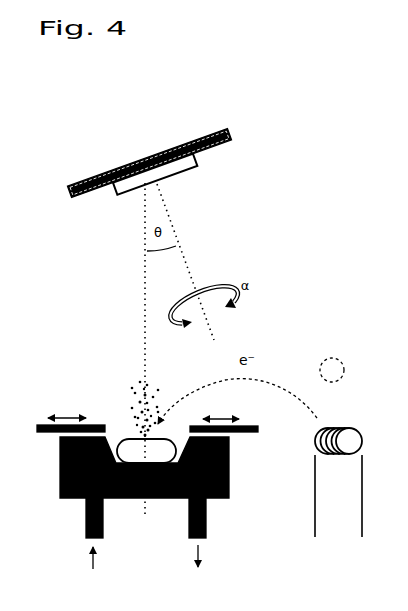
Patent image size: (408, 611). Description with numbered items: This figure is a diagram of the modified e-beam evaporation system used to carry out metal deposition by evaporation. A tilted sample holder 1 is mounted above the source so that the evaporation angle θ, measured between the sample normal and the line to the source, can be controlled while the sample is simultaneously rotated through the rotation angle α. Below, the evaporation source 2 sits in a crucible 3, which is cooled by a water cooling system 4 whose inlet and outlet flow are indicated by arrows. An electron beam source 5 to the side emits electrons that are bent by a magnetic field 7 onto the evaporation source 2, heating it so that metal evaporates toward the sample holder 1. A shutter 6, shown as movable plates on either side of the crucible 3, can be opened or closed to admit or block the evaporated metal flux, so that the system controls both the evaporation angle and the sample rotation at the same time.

The sample holder 1 is at (151, 175).
The evaporation source 2 is at (138, 409).
The crucible 3 is at (144, 467).
The water cooling system 4 is at (146, 533).
The electron beam source 5 is at (338, 482).
The shutter 6 is at (155, 428).
The magnetic field 7 is at (341, 370).